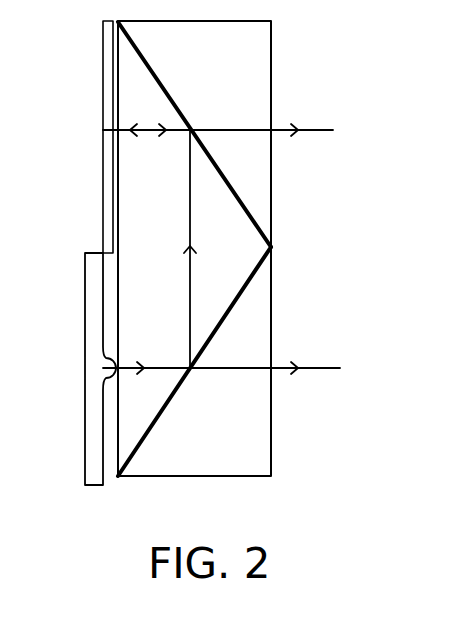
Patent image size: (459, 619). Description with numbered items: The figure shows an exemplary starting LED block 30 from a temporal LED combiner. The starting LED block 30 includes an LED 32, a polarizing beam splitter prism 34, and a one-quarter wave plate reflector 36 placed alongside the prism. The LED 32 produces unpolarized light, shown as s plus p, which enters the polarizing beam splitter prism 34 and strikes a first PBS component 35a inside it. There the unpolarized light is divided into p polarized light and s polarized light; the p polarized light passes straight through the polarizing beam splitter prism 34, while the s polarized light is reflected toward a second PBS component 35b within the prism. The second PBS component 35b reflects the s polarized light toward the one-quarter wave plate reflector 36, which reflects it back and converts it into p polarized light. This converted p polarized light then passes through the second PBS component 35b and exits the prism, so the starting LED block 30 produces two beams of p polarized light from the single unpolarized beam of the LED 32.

The starting LED block 30 is at (318, 20).
The LED 32 is at (85, 274).
The polarizing beam splitter prism 34 is at (272, 204).
The PBS component 35a is at (211, 342).
The second PBS component 35b is at (209, 147).
The one-quarter wave plate reflector 36 is at (103, 152).